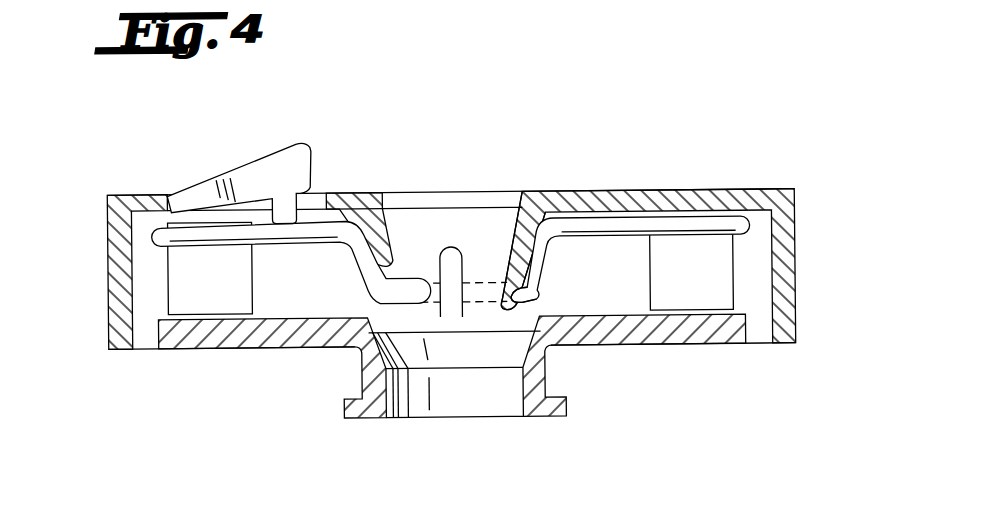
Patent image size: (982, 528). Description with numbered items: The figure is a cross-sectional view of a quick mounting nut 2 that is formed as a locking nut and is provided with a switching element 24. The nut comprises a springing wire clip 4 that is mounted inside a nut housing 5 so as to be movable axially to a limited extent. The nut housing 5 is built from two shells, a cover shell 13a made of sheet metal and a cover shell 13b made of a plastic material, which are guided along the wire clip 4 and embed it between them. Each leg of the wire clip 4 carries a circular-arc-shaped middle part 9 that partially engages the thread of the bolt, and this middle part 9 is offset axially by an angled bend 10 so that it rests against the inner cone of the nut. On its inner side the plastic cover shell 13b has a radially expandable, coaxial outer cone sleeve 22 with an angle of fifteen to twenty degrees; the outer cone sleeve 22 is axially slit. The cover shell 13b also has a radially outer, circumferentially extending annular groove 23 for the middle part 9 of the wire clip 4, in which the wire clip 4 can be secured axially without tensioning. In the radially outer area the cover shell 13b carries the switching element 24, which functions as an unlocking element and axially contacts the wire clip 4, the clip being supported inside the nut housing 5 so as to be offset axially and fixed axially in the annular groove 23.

The quick mounting nut 2 is at (678, 134).
The wire clip 4 is at (306, 231).
The nut housing 5 is at (98, 284).
The middle part 9 is at (452, 290).
The angled bend 10 is at (538, 266).
The cover shell 13a is at (641, 328).
The cover shell 13b is at (797, 195).
The outer cone sleeve 22 is at (504, 262).
The annular groove 23 is at (530, 297).
The switching element 24 is at (274, 166).